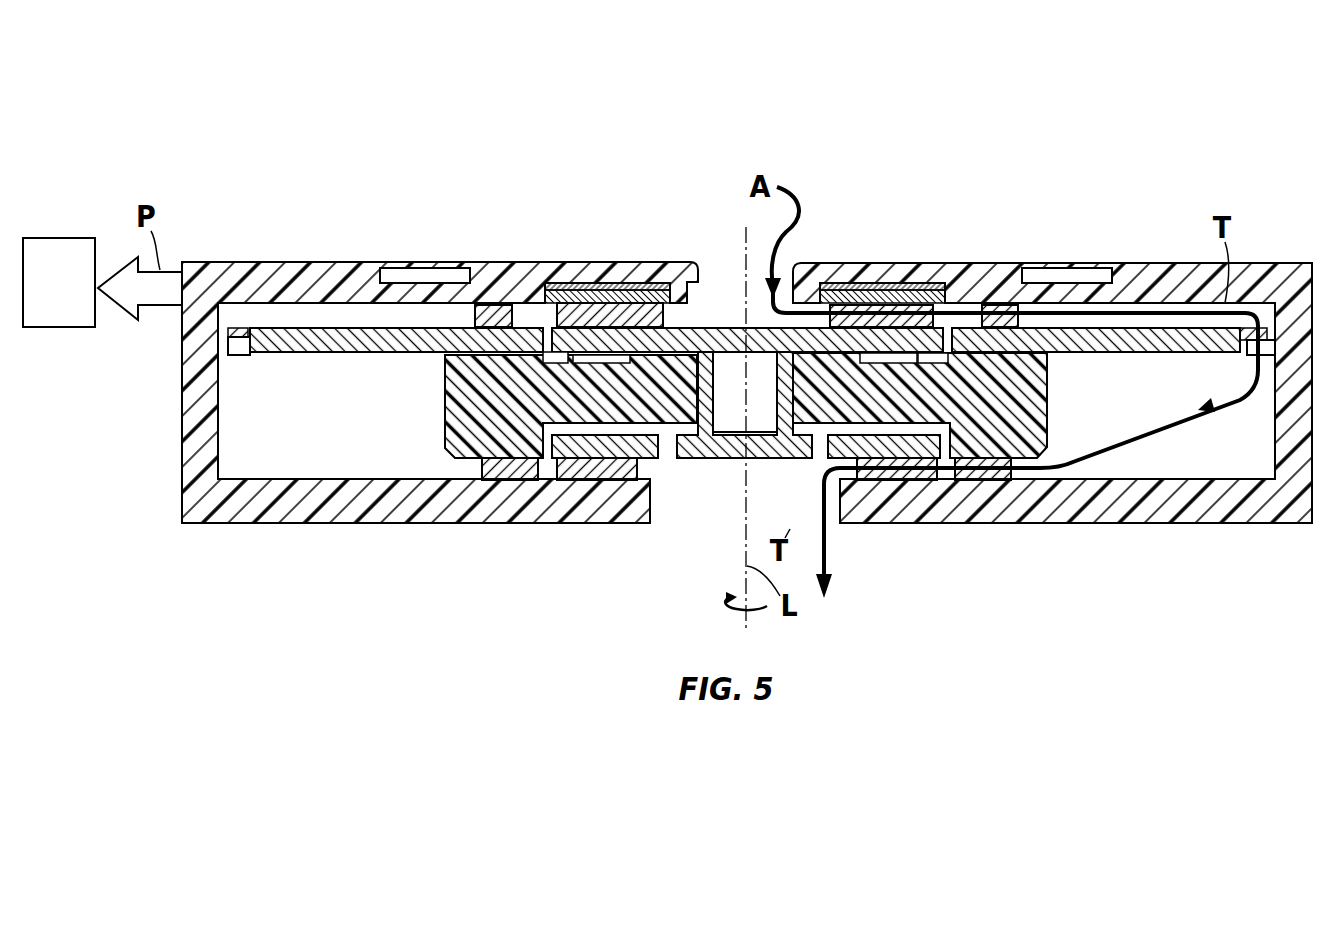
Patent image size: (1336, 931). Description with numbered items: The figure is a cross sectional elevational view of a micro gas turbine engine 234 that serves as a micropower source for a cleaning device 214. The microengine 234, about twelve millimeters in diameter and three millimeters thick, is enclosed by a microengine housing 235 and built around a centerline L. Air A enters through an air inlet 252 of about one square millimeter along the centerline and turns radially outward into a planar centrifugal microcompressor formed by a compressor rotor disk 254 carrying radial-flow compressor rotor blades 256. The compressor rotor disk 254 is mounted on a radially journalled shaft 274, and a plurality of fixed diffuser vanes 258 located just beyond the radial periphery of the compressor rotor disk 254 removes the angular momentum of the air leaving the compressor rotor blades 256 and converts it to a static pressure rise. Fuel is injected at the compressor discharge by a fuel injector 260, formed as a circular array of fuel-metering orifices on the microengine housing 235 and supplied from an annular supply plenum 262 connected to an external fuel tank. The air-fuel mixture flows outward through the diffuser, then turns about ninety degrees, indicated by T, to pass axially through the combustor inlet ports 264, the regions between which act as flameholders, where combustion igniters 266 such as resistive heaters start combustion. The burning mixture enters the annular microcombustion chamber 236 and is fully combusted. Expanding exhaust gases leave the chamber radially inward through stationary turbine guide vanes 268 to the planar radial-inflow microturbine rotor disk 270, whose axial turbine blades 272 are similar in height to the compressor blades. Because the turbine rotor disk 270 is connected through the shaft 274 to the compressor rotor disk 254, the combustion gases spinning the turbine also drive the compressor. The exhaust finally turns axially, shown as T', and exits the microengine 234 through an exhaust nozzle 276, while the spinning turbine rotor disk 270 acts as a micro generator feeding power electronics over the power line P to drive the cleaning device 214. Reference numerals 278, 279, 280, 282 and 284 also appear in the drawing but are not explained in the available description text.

The cleaning device 214 is at (41, 297).
The micro gas turbine engine 234 is at (1078, 125).
The microengine housing 235 is at (1160, 268).
The annular microcombustion chamber 236 is at (302, 436).
The air inlet 252 is at (710, 301).
The compressor rotor disk 254 is at (692, 327).
The compressor rotor blades 256 is at (575, 303).
The fixed diffuser vanes 258 is at (495, 304).
The fuel injector 260 is at (472, 300).
The annular supply plenum 262 is at (395, 268).
The combustor inlet ports 264 is at (238, 356).
The combustion igniters 266 is at (248, 328).
The stationary turbine guide vanes 268 is at (500, 481).
The microturbine rotor disk 270 is at (712, 458).
The turbine blades 272 is at (575, 481).
The shaft 274 is at (778, 404).
The exhaust nozzle 276 is at (694, 554).
The magnet layer 278 is at (575, 358).
The gap 279 is at (670, 452).
The magnet 280 is at (590, 400).
The upper layer 282 is at (640, 290).
The upper thin layer 284 is at (600, 283).